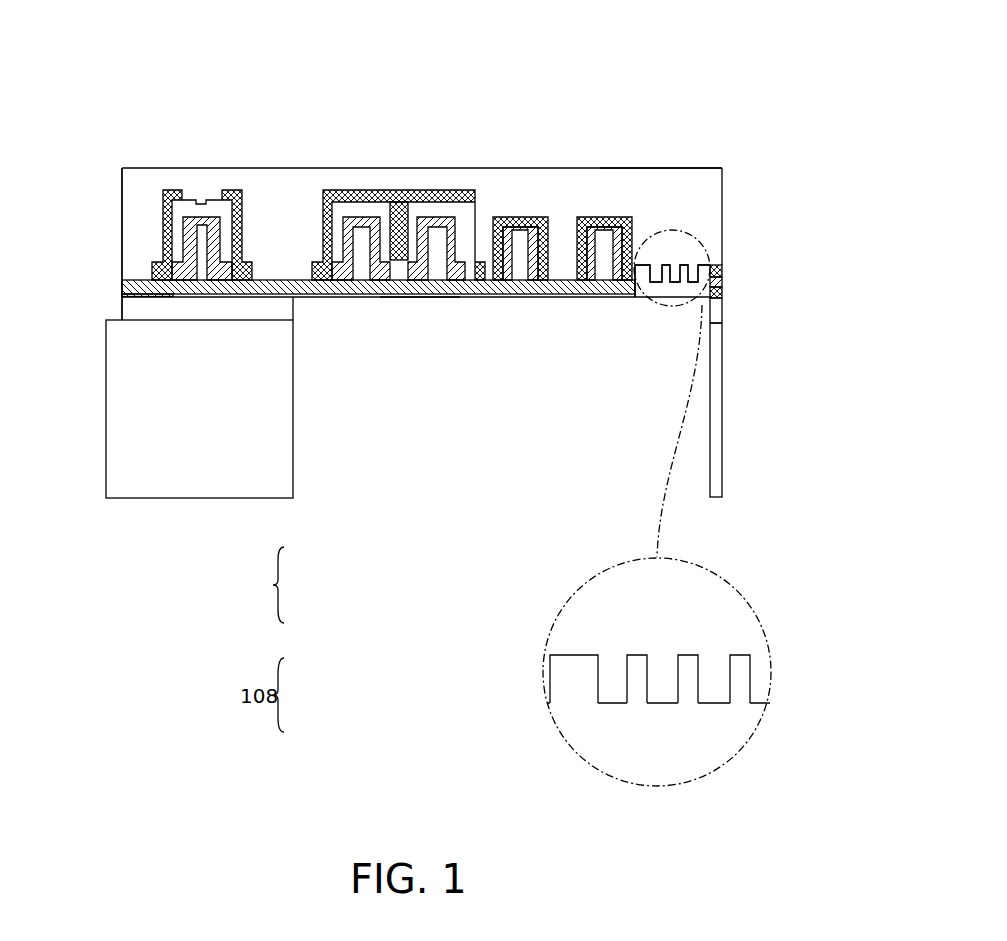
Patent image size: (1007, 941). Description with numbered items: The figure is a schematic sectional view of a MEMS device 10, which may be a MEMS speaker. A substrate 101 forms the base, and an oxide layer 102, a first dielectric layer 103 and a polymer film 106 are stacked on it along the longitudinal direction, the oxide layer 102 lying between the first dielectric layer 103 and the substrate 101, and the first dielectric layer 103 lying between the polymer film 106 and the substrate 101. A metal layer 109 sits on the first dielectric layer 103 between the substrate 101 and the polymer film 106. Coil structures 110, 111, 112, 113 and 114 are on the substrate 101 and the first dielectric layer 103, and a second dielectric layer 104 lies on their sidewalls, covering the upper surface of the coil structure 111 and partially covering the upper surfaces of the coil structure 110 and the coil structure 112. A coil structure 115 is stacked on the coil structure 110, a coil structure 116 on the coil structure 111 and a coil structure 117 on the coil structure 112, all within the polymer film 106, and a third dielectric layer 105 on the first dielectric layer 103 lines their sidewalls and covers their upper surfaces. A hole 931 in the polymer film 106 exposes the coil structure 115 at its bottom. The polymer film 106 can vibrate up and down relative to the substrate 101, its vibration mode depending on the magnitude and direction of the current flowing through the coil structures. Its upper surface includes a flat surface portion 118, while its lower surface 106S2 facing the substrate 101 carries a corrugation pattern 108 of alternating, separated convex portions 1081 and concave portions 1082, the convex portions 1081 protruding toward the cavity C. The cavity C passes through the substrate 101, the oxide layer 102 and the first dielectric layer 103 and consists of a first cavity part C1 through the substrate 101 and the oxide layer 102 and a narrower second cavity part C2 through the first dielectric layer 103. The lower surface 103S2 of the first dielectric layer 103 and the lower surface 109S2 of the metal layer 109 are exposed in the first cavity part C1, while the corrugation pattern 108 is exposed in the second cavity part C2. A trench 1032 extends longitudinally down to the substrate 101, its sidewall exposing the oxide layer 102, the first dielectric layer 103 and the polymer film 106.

The MEMS device 10 is at (87, 32).
The trench 1032 is at (115, 181).
The hole 931 is at (209, 178).
The coil structure 115 is at (187, 212).
The coil structure 110 is at (202, 252).
The coil structure 116 is at (348, 210).
The coil structure 117 is at (413, 208).
The coil structure 111 is at (363, 238).
The coil structure 112 is at (437, 238).
The coil structure 113 is at (518, 240).
The coil structure 114 is at (605, 240).
The flat surface portion 118 is at (690, 163).
The polymer film 106 is at (714, 196).
The third dielectric layer 105 is at (722, 270).
The second dielectric layer 104 is at (722, 282).
The first dielectric layer 103 is at (722, 293).
The lower surface 103S2 is at (148, 302).
The oxide layer 102 is at (714, 310).
The substrate 101 is at (718, 420).
The metal layer 109 is at (366, 298).
The lower surface 109S2 is at (418, 303).
The corrugation pattern 108 is at (652, 292).
The lower surface 106S2 is at (672, 281).
The cavity C is at (285, 585).
The first cavity part C1 is at (564, 470).
The second cavity part C2 is at (680, 292).
The convex portion 1081 is at (612, 680).
The concave portion 1082 is at (575, 660).